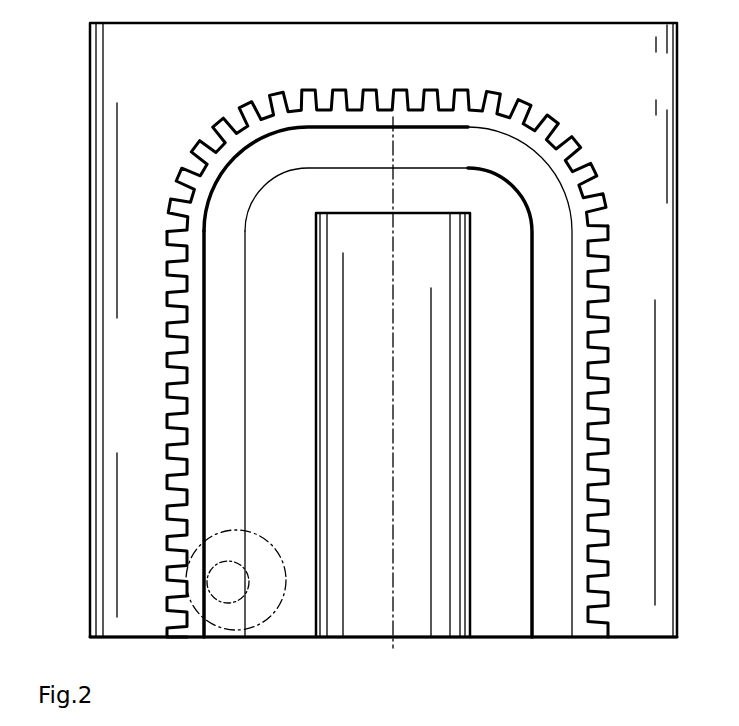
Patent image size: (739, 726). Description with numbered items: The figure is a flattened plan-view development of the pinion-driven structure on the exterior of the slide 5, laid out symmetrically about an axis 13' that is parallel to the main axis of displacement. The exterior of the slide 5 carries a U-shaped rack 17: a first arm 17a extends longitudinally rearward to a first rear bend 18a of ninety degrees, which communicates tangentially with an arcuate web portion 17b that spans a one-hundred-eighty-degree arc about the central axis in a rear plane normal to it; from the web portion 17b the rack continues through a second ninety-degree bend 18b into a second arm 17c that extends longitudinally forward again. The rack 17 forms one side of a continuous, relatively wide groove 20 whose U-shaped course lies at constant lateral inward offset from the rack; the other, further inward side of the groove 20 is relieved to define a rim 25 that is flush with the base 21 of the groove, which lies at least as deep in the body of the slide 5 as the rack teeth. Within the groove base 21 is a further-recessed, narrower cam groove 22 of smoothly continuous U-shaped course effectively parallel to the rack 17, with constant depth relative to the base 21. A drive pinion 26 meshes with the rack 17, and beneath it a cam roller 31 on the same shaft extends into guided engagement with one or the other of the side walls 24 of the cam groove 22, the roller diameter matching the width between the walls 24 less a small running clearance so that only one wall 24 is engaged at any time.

The U-shaped rack 17 is at (399, 336).
The first arm 17a is at (168, 388).
The arcuate web portion 17b is at (375, 107).
The second arm 17c is at (600, 262).
The first rear bend 18a is at (201, 144).
The second bend 18b is at (551, 127).
The groove 20 is at (308, 88).
The base of groove 21 is at (572, 167).
The cam groove 22 is at (422, 157).
The side walls of cam groove 24 is at (247, 403).
The rim 25 is at (473, 353).
The drive pinion 26 is at (273, 620).
The cam roller 31 is at (233, 577).
The axis of symmetry of the development 13' is at (436, 404).
The slide 5 is at (668, 90).